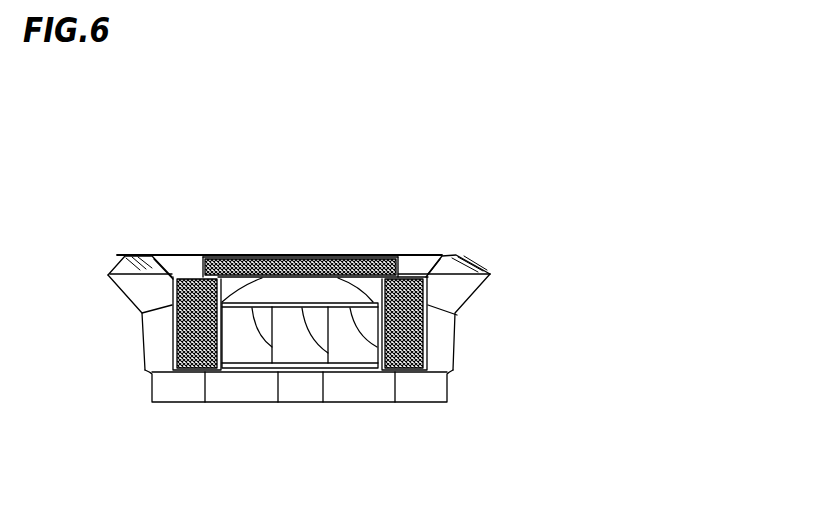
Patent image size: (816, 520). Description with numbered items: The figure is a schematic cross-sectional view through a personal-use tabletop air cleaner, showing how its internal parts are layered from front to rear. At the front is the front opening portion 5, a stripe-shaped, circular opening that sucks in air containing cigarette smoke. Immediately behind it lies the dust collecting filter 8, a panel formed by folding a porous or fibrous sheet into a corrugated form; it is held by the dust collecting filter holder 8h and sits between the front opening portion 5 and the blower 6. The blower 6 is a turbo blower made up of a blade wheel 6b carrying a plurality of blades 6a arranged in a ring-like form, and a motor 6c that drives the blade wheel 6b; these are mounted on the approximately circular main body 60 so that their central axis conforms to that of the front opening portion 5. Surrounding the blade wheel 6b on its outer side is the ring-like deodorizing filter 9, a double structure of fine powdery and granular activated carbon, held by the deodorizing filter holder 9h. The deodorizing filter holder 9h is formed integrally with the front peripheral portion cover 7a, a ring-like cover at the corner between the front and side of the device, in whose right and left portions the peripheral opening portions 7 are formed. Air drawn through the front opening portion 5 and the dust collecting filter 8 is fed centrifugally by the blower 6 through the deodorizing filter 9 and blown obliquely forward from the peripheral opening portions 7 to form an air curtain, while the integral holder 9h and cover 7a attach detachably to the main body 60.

The front opening portion 5 is at (338, 255).
The blower 6 is at (345, 343).
The blades 6a is at (288, 352).
The blade wheel 6b is at (290, 293).
The motor 6c is at (298, 390).
The peripheral opening portions 7 is at (125, 258).
The front peripheral portion cover 7a is at (143, 267).
The dust collecting filter 8 is at (228, 253).
The dust collecting filter holder 8h is at (400, 267).
The deodorizing filter 9 is at (417, 340).
The deodorizing filter holder 9h is at (430, 323).
The main body 60 is at (148, 342).